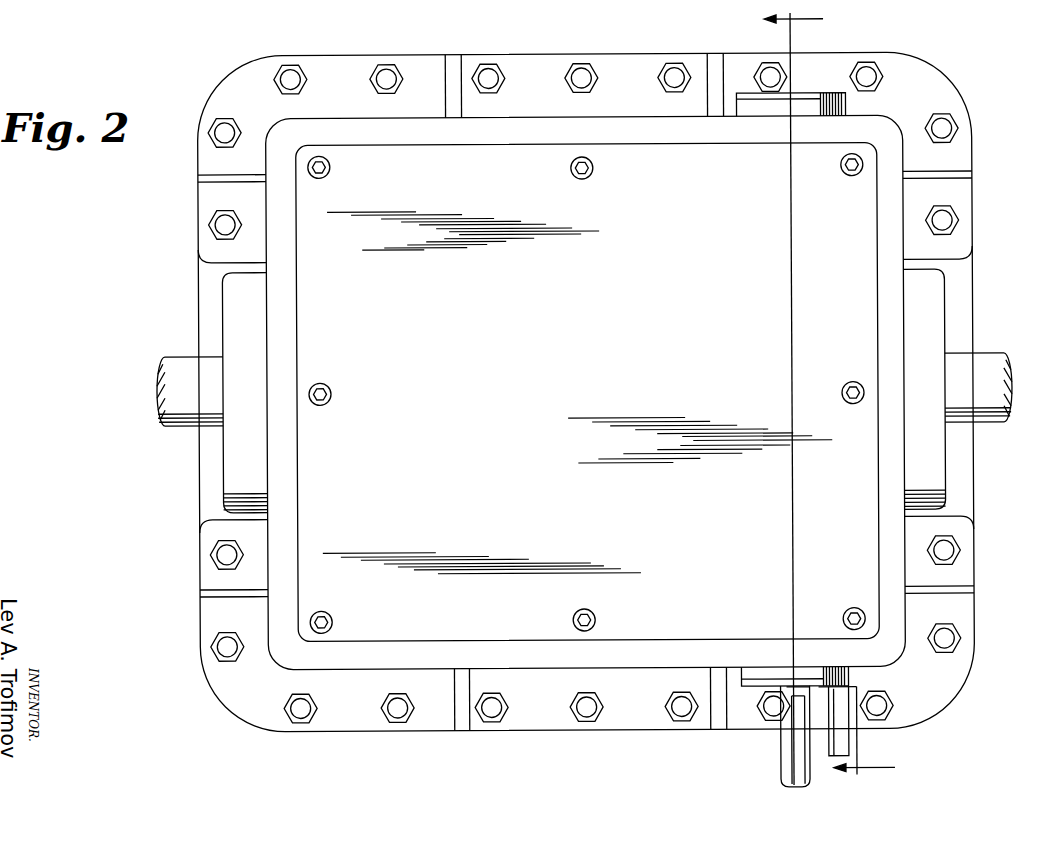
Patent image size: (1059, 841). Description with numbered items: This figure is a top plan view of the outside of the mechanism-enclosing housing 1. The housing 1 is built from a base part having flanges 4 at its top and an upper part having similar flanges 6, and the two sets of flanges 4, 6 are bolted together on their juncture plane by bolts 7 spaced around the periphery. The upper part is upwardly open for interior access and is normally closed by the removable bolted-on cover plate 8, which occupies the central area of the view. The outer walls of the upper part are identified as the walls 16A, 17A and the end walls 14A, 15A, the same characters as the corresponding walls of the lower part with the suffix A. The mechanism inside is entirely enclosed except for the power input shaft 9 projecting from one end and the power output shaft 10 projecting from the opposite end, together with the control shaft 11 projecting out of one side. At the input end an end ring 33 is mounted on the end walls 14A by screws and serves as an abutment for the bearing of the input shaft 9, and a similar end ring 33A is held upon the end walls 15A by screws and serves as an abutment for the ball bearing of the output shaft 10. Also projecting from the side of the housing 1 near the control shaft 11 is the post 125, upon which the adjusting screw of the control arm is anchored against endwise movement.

The housing 1 is at (990, 488).
The flanges 4 is at (829, 398).
The flanges 6 is at (958, 151).
The bolts 7 is at (208, 228).
The cover plate 8 is at (696, 515).
The power input shaft 9 is at (190, 424).
The power output shaft 10 is at (973, 414).
The control shaft 11 is at (778, 769).
The end wall of upper part 14A is at (265, 577).
The end wall of upper part 15A is at (890, 551).
The outer wall of upper part 16A is at (372, 672).
The outer wall of upper part 17A is at (371, 118).
The end ring 33 is at (230, 474).
The end ring 33A is at (928, 463).
The post 125 is at (833, 712).